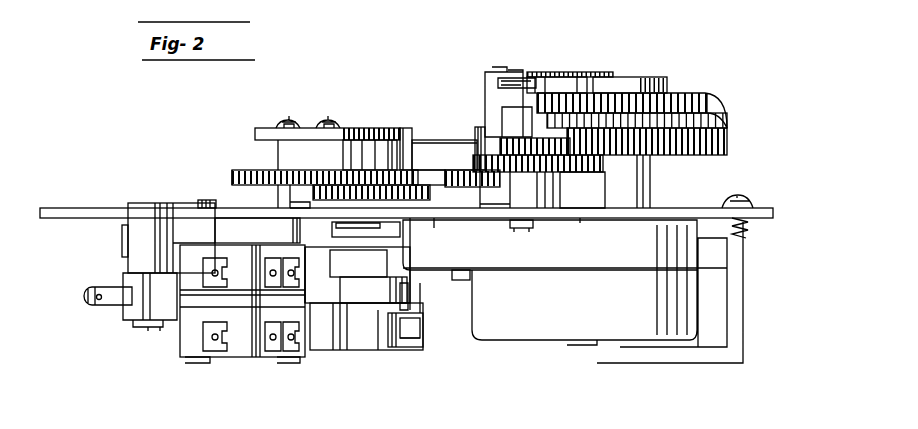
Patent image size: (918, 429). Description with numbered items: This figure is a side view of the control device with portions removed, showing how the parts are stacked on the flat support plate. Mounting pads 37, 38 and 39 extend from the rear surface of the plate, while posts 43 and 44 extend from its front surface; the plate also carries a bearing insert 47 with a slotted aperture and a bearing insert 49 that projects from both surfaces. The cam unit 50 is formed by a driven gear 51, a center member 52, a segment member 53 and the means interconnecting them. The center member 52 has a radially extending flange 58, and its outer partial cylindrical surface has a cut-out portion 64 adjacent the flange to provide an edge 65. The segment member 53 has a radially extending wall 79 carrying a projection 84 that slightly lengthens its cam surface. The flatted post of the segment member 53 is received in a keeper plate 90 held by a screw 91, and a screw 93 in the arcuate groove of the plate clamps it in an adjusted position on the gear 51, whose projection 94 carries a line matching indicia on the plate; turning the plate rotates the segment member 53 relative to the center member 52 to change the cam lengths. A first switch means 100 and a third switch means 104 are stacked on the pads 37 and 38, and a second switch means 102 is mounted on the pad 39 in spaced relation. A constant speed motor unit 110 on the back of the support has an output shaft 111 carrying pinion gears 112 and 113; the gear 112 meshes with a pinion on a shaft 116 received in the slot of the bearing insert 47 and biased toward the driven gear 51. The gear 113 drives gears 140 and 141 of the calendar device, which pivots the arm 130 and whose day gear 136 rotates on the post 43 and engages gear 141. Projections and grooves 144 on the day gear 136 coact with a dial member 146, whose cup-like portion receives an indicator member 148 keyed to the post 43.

The mounting pad 37 is at (276, 238).
The mounting pad 38 is at (196, 228).
The mounting pad 39 is at (126, 238).
The post 43 is at (652, 196).
The post 44 is at (560, 208).
The bearing insert 47 is at (407, 222).
The bearing insert 49 is at (297, 190).
The cam unit 50 is at (250, 120).
The driven gear 51 is at (247, 172).
The center member 52 is at (330, 312).
The segment member 53 is at (420, 312).
The flange 58 is at (297, 230).
The cut-out portion 64 is at (379, 312).
The edge 65 is at (344, 268).
The radially extending wall 79 is at (413, 296).
The projection 84 is at (418, 340).
The keeper plate 90 is at (371, 128).
The screw 91 is at (336, 120).
The screw 93 is at (306, 120).
The projection 94 is at (406, 136).
The first switch means 100 is at (176, 344).
The second switch means 102 is at (137, 312).
The third switch means 104 is at (241, 343).
The constant speed motor unit 110 is at (543, 322).
The output shaft 111 is at (472, 284).
The pinion gear 112 is at (440, 210).
The pinion gear 113 is at (488, 206).
The shaft 116 is at (358, 228).
The arm 130 is at (440, 150).
The day gear 136 is at (724, 128).
The gear 140 is at (564, 172).
The gear 141 is at (513, 137).
The projections and grooves 144 is at (726, 110).
The dial member 146 is at (704, 96).
The indicator member 148 is at (632, 80).